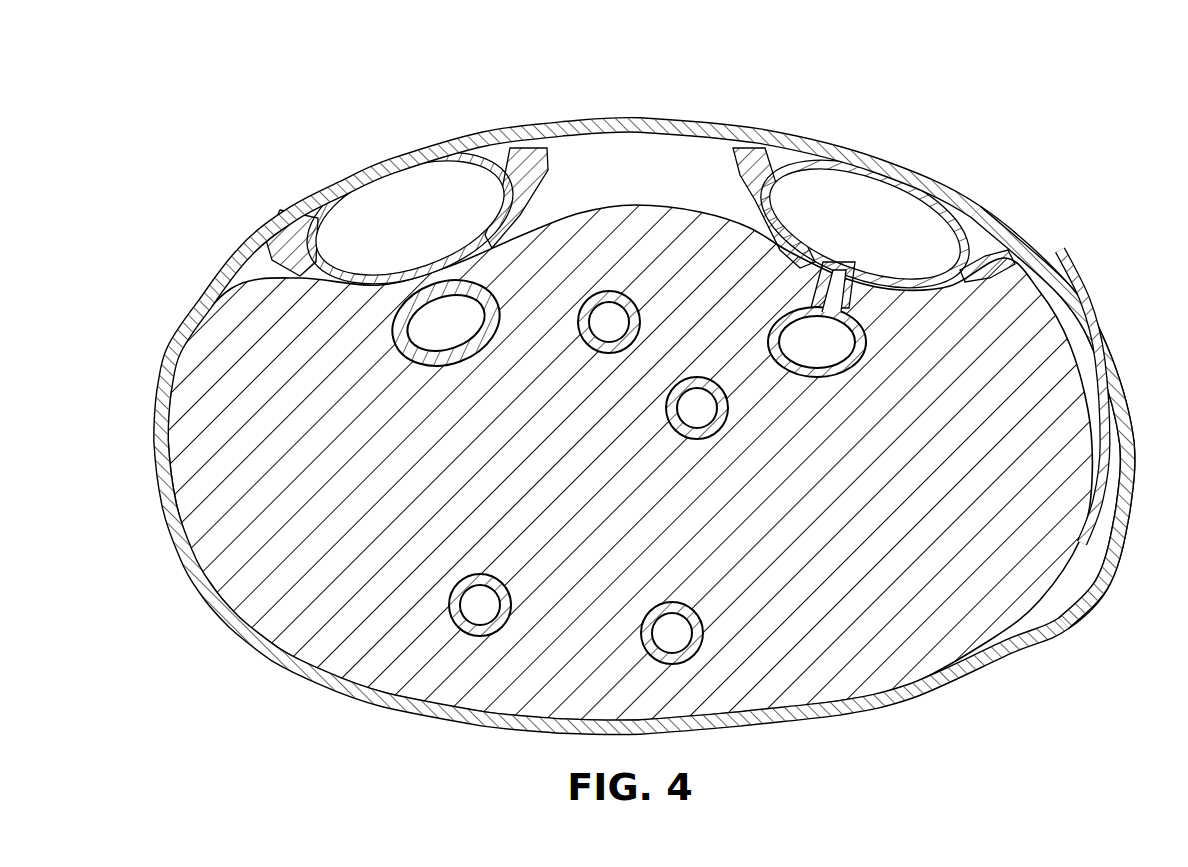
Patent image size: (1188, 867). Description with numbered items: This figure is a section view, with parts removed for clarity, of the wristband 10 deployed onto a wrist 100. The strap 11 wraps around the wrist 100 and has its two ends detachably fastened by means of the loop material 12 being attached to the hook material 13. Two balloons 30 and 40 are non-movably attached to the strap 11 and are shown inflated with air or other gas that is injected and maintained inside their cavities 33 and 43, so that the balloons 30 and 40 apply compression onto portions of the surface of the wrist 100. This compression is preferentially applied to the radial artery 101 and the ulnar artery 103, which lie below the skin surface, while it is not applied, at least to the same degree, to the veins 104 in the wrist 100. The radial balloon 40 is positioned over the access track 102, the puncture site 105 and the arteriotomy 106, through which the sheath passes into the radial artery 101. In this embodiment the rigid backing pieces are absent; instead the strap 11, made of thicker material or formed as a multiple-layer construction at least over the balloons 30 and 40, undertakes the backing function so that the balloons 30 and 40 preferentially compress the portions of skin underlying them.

The wristband 10 is at (826, 92).
The strap 11 is at (638, 121).
The loop material 12 is at (1133, 446).
The hook material 13 is at (1096, 372).
The balloon 30 is at (518, 188).
The cavity 33 is at (418, 235).
The radial balloon 40 is at (752, 189).
The cavity 43 is at (866, 226).
The wrist 100 is at (637, 203).
The radial artery 101 is at (798, 377).
The access track 102 is at (865, 308).
The ulnar artery 103 is at (455, 362).
The veins 104 is at (643, 322).
The puncture site 105 is at (858, 264).
The arteriotomy 106 is at (815, 301).